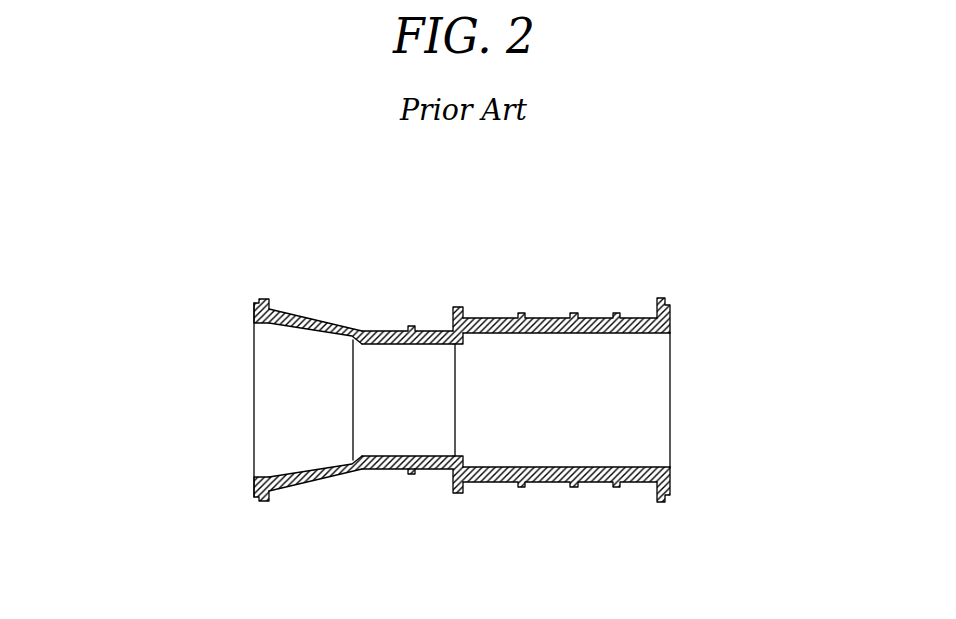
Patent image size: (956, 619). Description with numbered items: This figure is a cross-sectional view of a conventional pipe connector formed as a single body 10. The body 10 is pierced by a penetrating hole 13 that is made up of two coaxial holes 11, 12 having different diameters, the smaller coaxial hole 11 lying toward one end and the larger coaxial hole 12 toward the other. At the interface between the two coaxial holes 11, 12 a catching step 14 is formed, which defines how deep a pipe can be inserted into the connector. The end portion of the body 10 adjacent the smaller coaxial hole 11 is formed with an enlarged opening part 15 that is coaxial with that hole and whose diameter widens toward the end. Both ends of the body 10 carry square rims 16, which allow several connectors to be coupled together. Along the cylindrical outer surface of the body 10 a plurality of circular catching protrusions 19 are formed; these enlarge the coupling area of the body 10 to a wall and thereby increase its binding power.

The body 10 is at (464, 400).
The coaxial hole 11 is at (404, 355).
The coaxial hole 12 is at (616, 355).
The penetrating hole 13 is at (667, 362).
The catching step 14 is at (463, 494).
The enlarged opening part 15 is at (292, 372).
The square rim 16 is at (253, 305).
The circular catching protrusion 19 is at (414, 474).